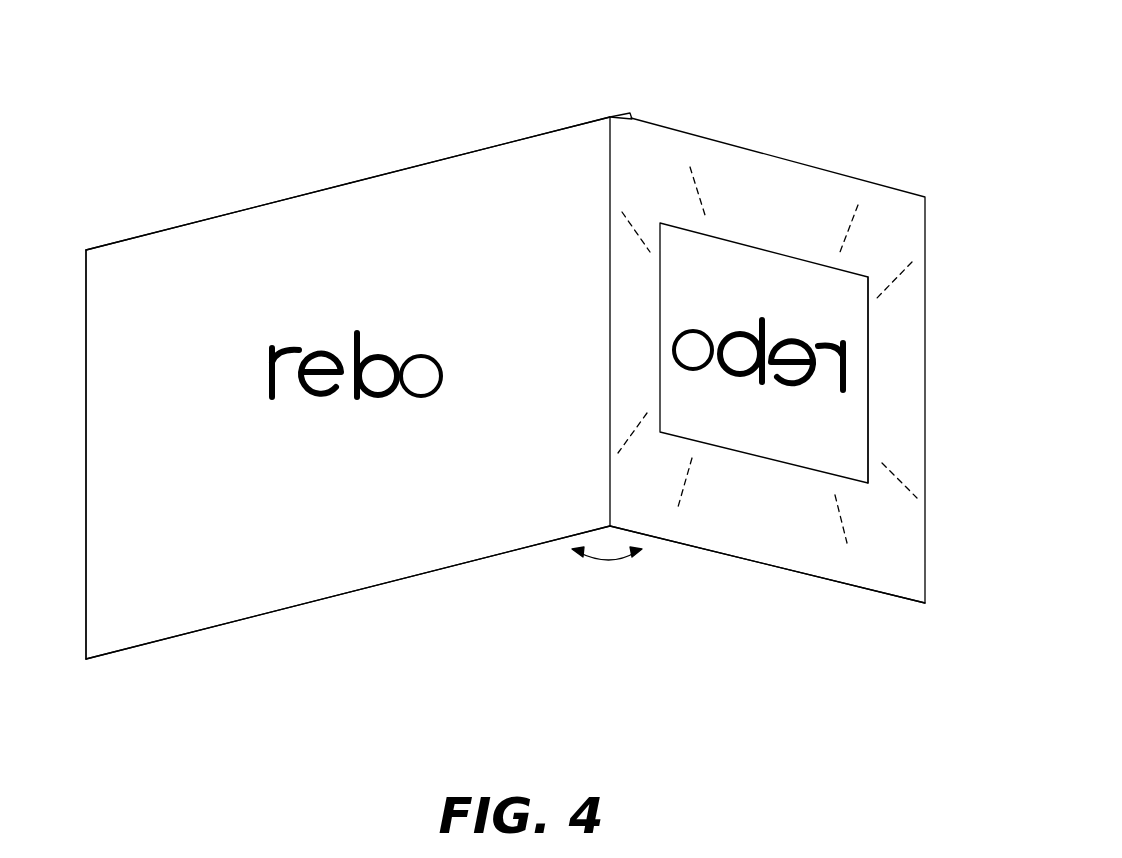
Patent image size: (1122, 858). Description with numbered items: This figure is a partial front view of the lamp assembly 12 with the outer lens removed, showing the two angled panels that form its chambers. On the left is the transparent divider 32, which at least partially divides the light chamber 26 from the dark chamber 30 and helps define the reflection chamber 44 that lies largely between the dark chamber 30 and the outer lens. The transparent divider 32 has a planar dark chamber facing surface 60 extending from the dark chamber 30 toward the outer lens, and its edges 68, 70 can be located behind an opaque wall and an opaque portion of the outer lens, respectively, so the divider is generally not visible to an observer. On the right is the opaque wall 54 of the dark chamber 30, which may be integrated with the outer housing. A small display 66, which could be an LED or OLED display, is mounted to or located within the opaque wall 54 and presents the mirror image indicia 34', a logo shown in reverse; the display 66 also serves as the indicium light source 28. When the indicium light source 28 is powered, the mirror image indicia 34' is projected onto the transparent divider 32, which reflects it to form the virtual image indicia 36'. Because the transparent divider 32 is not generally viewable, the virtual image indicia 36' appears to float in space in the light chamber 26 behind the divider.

The lamp assembly 12 is at (661, 58).
The light chamber 26 is at (382, 152).
The dark chamber 30 is at (685, 142).
The reflection chamber 44 is at (555, 160).
The transparent divider 32 is at (190, 247).
The dark chamber facing surface 60 is at (327, 572).
The edge 70 is at (84, 633).
The virtual image indicia 36' is at (356, 331).
The edge 68 is at (631, 117).
The opaque wall 54 is at (882, 582).
The indicium light source 28 is at (863, 363).
The display 66 is at (862, 412).
The mirror image indicia 34' is at (758, 475).